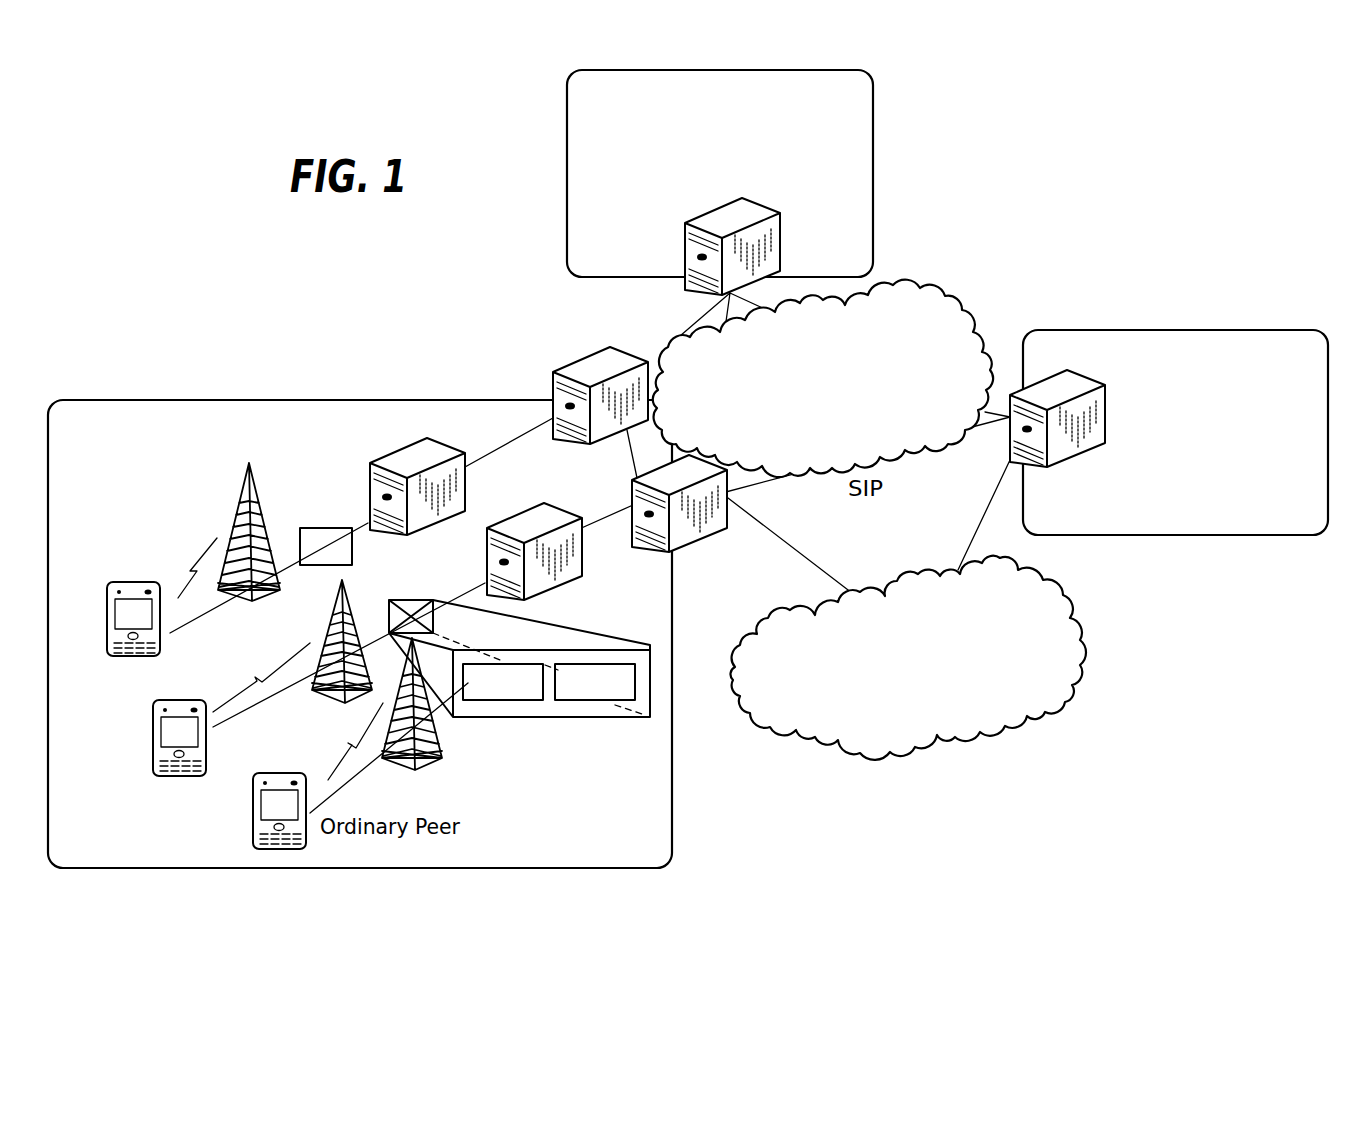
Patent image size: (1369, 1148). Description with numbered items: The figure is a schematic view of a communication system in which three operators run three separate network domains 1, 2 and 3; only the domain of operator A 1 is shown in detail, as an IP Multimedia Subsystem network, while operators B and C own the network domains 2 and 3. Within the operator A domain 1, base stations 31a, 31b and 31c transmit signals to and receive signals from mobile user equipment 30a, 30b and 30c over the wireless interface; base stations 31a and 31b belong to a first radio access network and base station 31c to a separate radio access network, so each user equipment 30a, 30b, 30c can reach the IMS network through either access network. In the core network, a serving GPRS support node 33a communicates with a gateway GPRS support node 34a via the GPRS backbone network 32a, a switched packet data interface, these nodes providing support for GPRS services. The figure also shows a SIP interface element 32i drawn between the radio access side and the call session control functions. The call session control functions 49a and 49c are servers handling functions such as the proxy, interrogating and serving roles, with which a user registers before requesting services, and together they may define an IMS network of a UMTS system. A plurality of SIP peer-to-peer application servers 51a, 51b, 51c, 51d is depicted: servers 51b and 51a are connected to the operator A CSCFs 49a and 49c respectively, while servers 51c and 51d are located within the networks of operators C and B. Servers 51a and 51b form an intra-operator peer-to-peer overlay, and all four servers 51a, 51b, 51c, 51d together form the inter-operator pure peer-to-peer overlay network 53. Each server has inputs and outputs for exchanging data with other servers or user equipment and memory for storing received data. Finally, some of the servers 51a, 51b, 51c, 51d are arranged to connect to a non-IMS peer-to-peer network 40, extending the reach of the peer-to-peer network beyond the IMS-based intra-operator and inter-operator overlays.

The network domain 1 is at (125, 400).
The network domain 2 is at (567, 176).
The network domain 3 is at (1172, 330).
The mobile user equipment 30a is at (250, 828).
The mobile user equipment 30b is at (151, 745).
The mobile user equipment 30c is at (125, 582).
The base station 31a is at (433, 763).
The base station 31b is at (312, 620).
The base station 31c is at (243, 488).
The SIP interface 32i is at (300, 530).
The GPRS backbone network 32a is at (519, 710).
The serving GPRS support node 33a is at (495, 700).
The gateway GPRS support node 34a is at (618, 700).
The Non-IMS P2P network 40 is at (912, 750).
The call session control function 49a is at (580, 570).
The call session control function 49c is at (437, 458).
The SIP P2P application server 51a is at (568, 368).
The SIP P2P application server 51b is at (730, 505).
The SIP P2P application server 51c is at (1105, 398).
The SIP P2P application server 51d is at (685, 232).
The inter operator pure P2P overlay network 53 is at (965, 300).